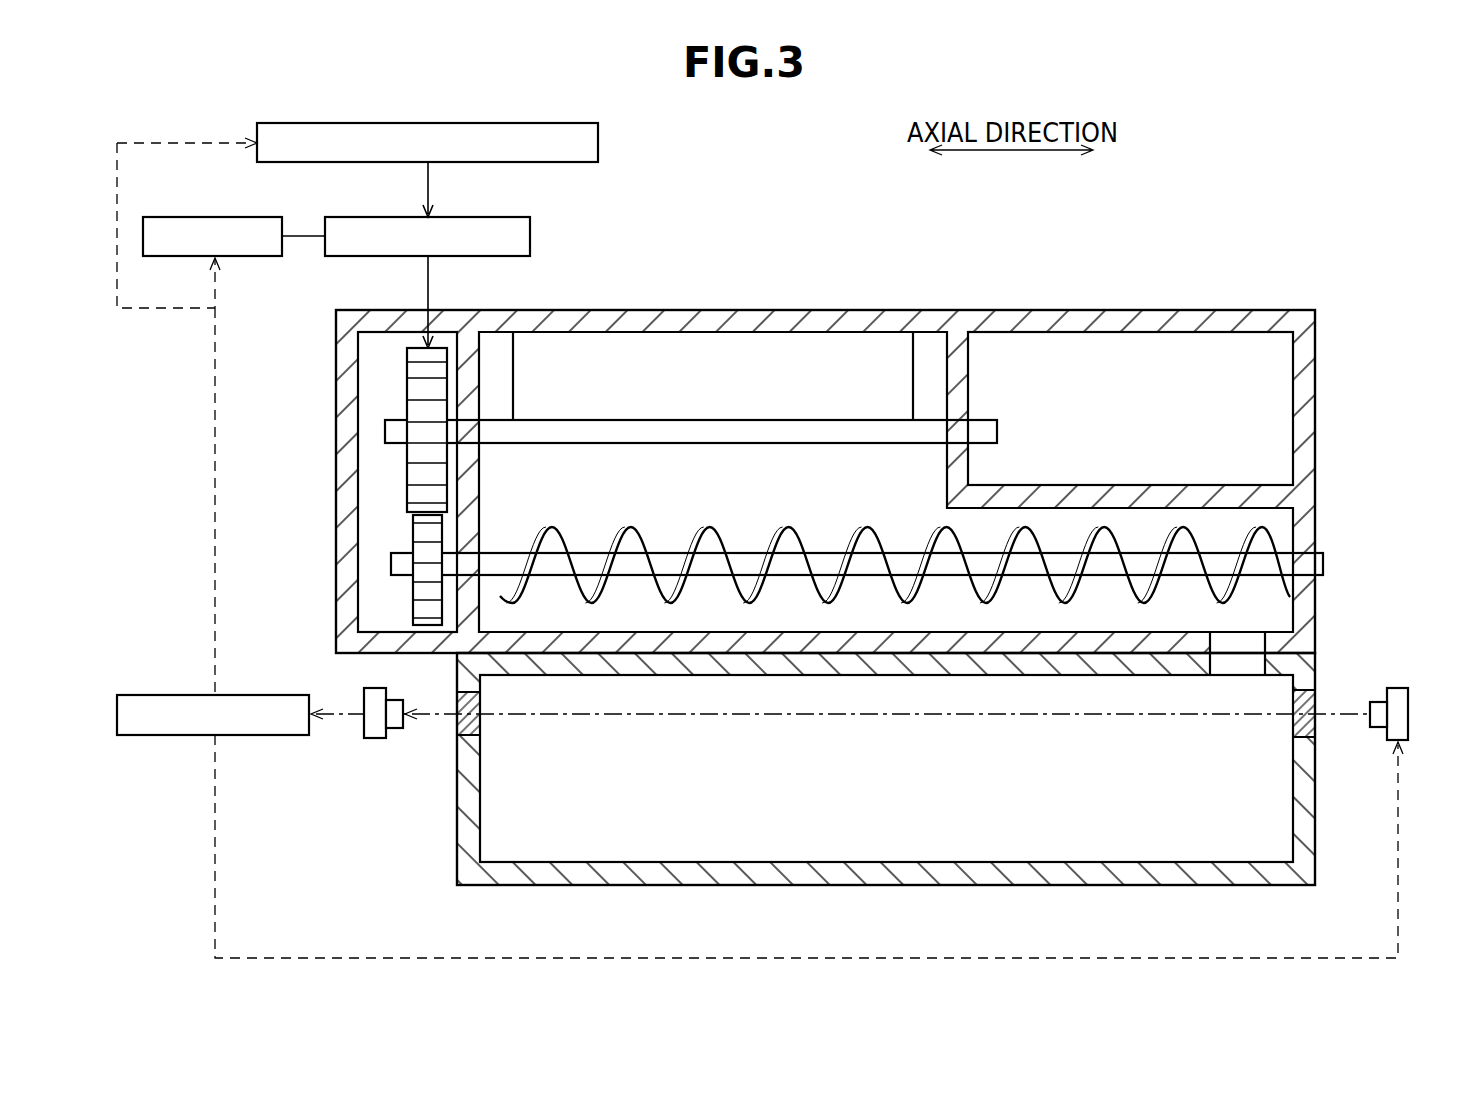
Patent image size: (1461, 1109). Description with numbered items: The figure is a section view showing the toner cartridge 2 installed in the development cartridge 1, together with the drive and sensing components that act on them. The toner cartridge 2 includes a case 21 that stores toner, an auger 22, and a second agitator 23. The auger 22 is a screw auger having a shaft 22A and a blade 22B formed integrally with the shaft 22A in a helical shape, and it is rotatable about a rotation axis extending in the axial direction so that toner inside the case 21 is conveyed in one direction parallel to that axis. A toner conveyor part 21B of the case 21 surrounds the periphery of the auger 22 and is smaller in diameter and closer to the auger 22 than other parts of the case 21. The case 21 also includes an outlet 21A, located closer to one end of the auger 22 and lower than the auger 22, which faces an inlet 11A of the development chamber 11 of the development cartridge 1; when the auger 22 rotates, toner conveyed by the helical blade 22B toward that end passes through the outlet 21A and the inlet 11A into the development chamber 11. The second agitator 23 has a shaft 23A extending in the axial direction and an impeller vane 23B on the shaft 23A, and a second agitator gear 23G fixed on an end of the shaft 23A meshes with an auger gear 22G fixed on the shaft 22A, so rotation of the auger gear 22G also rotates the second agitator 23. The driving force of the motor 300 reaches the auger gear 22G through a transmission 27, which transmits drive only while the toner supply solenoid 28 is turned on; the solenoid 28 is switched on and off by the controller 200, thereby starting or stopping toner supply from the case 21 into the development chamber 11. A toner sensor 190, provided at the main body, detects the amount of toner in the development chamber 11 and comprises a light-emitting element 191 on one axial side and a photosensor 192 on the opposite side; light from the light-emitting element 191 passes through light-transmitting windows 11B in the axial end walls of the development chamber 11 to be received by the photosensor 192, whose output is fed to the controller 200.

The development cartridge 1 is at (889, 803).
The toner cartridge 2 is at (828, 441).
The development chamber 11 is at (1290, 822).
The inlet 11A is at (1242, 665).
The windows 11B is at (458, 727).
The case 21 is at (612, 310).
The outlet 21A is at (1262, 640).
The toner conveyor part 21B is at (1238, 518).
The auger 22 is at (857, 405).
The shaft 22A is at (1133, 565).
The blade 22B is at (1198, 560).
The auger gear 22G is at (418, 536).
The second agitator 23 is at (691, 326).
The shaft 23A is at (725, 432).
The impeller vane 23B is at (784, 370).
The second agitator gear 23G is at (418, 386).
The transmission 27 is at (530, 236).
The toner supply solenoid 28 is at (598, 143).
The toner sensor 190 is at (1399, 694).
The light-emitting element 191 is at (1390, 733).
The photosensor 192 is at (368, 740).
The controller 200 is at (240, 695).
The motor 300 is at (240, 217).